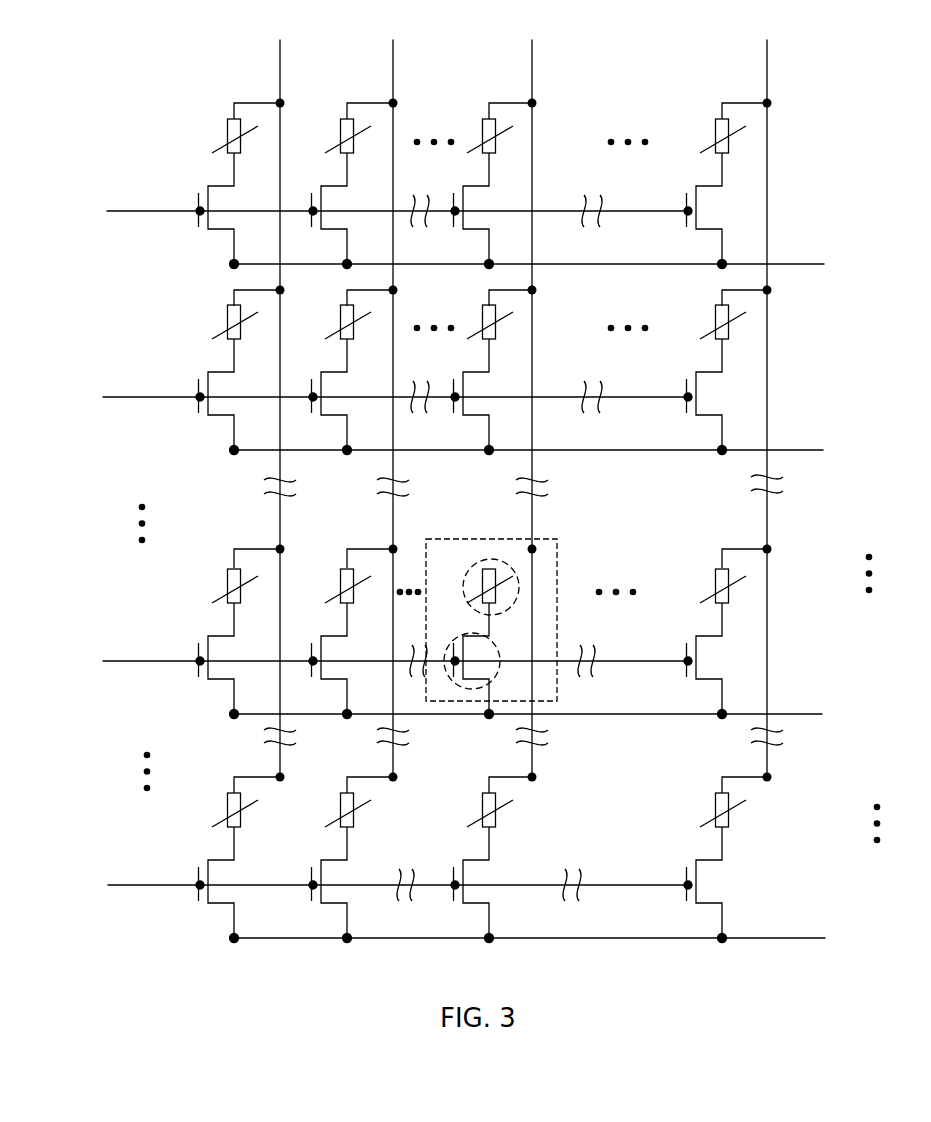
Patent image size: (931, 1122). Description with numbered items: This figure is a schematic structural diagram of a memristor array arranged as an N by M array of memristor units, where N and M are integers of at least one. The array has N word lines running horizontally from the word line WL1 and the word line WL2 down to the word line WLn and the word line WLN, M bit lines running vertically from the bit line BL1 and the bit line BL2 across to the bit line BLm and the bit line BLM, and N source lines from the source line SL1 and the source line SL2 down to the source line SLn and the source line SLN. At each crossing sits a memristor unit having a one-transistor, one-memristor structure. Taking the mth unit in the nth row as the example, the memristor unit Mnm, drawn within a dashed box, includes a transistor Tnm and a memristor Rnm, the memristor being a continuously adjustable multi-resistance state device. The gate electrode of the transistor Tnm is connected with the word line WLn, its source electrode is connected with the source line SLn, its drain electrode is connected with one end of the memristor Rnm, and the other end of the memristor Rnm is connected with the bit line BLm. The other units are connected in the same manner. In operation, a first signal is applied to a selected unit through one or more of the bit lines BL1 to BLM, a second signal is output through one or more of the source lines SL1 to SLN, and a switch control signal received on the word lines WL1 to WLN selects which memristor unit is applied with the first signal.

The bit line BL1 is at (252, 406).
The bit line BL2 is at (366, 406).
The bit line BLm is at (504, 406).
The bit line BLM is at (797, 406).
The word line WL1 is at (362, 211).
The word line WL2 is at (358, 397).
The word line WLn is at (358, 660).
The word line WLN is at (356, 885).
The source line SL1 is at (563, 262).
The source line SL2 is at (562, 449).
The source line SLn is at (562, 712).
The source line SLN is at (564, 937).
The memristor unit Mnm is at (557, 539).
The memristor Rnm is at (462, 588).
The transistor Tnm is at (455, 638).